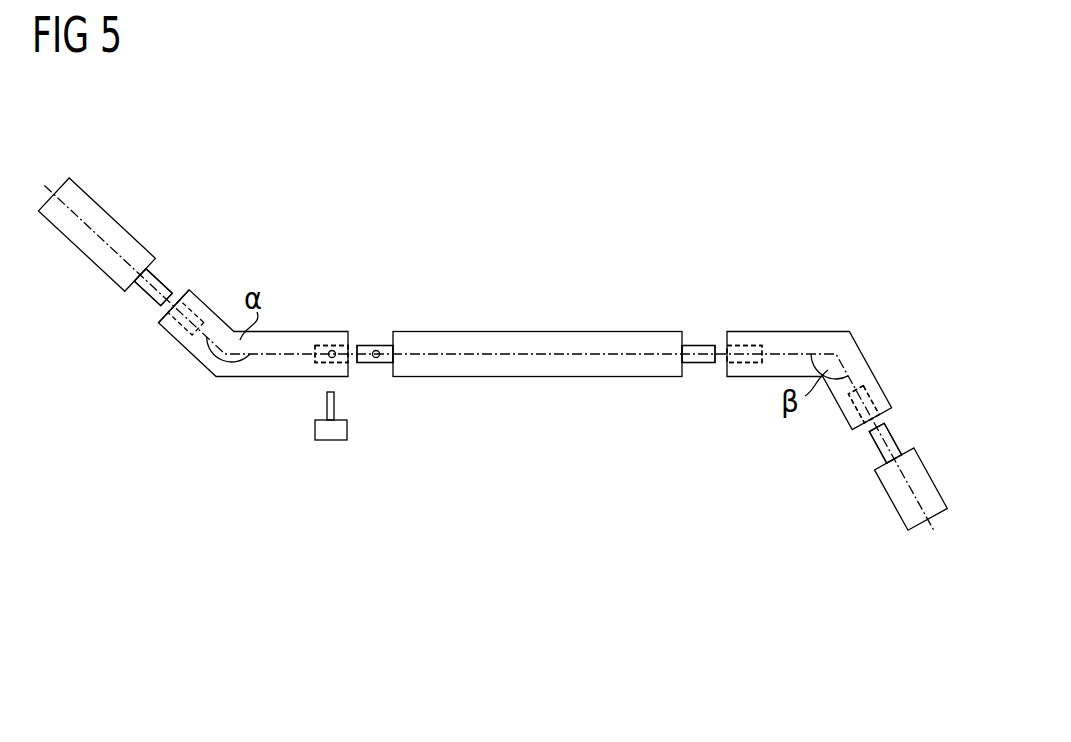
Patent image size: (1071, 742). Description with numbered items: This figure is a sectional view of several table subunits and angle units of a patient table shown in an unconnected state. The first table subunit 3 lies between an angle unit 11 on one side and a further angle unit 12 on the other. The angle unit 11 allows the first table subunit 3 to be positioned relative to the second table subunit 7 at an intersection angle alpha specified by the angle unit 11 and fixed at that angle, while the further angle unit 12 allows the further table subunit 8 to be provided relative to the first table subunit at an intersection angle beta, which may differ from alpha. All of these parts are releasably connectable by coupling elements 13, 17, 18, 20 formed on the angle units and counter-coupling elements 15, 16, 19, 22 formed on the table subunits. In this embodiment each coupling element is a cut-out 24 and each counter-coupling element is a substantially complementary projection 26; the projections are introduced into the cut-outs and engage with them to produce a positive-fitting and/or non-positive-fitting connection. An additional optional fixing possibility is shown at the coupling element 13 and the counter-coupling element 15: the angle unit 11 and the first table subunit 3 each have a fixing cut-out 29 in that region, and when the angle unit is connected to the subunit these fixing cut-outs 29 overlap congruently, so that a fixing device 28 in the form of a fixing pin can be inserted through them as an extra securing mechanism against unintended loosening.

The first table subunit 3 is at (536, 331).
The second table subunit 7 is at (97, 263).
The further table subunit 8 is at (895, 522).
The angle unit 11 is at (203, 365).
The further angle unit 12 is at (832, 331).
The coupling element 13 is at (326, 346).
The counter-coupling element 15 is at (368, 345).
The counter-coupling element 16 is at (695, 345).
The coupling element 17 is at (168, 324).
The coupling element 18 is at (738, 345).
The counter-coupling element 19 is at (165, 277).
The coupling element 20 is at (874, 395).
The counter-coupling element 22 is at (868, 458).
The cut-out 24 is at (196, 300).
The projection 26 is at (145, 303).
The fixing device 28 is at (315, 421).
The fixing cut-out 29 is at (328, 360).